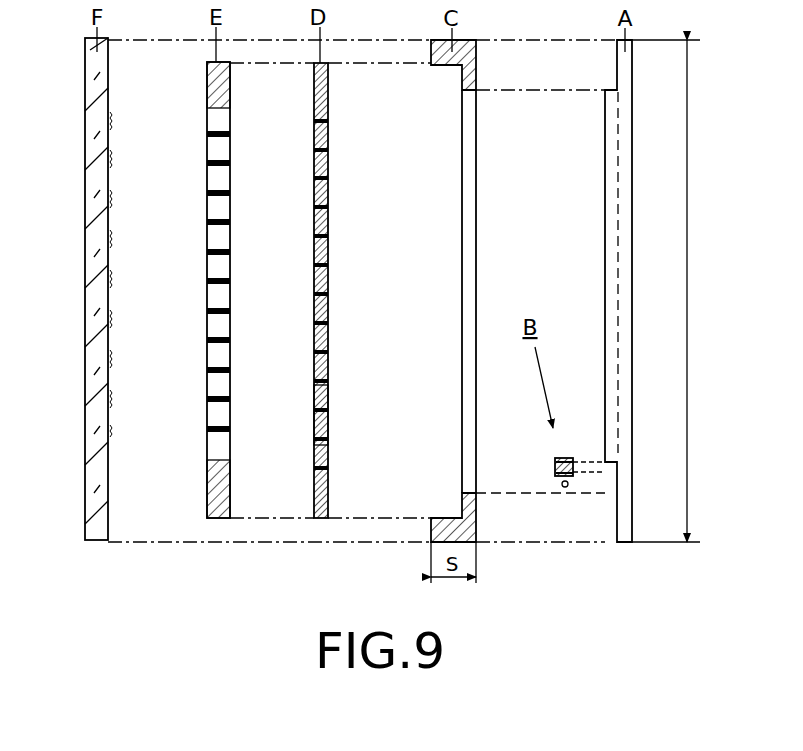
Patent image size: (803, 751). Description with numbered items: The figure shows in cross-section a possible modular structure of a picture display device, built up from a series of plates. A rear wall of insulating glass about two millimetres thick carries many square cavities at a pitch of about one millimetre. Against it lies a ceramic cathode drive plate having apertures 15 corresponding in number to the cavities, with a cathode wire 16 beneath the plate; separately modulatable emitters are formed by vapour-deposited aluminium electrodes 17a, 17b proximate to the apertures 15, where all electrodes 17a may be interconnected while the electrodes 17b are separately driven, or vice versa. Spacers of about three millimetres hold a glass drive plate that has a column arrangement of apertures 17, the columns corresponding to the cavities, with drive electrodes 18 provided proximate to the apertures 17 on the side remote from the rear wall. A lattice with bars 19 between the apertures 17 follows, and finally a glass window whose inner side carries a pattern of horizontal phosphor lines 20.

The apertures 15 is at (562, 456).
The cathode wire 16 is at (566, 488).
The apertures 17 is at (328, 157).
The electrodes 17a is at (558, 460).
The electrodes 17b is at (560, 478).
The drive electrodes 18 is at (314, 395).
The bars 19 is at (207, 197).
The horizontal phosphor lines 20 is at (118, 113).